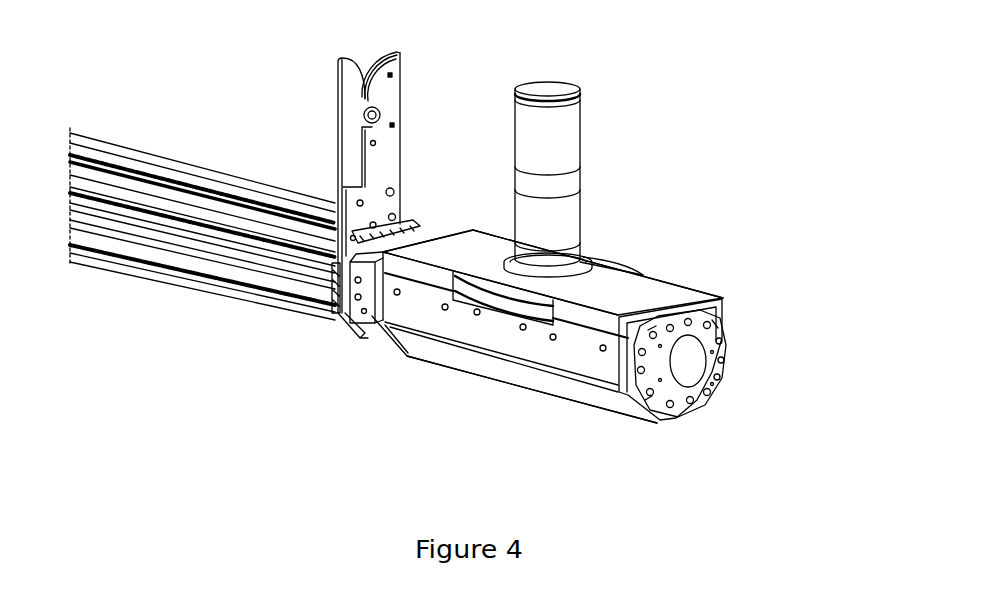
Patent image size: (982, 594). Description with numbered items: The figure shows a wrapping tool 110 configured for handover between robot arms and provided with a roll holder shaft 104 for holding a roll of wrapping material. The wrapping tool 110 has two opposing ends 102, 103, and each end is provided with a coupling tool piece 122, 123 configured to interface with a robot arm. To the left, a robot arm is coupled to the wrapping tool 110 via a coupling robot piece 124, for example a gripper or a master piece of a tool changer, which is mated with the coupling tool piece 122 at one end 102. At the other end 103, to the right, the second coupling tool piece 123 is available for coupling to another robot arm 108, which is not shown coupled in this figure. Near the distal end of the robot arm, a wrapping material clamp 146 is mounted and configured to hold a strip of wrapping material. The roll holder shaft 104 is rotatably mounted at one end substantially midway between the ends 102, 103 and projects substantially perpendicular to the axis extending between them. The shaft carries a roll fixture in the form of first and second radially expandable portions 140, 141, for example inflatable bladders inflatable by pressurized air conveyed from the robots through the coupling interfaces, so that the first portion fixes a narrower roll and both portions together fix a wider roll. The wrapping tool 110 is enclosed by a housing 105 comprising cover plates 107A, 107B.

The end 102 is at (447, 228).
The end 103 is at (728, 303).
The roll holder shaft 104 is at (547, 84).
The housing 105 is at (517, 384).
The cover plate 107A is at (669, 296).
The cover plate 107B is at (584, 361).
The robot arm 108 is at (142, 154).
The wrapping tool 110 is at (461, 391).
The coupling tool piece 122 is at (343, 314).
The coupling tool piece 123 is at (726, 363).
The coupling robot piece 124 is at (334, 268).
The roll fixture 140 is at (393, 92).
The roll fixture 141 is at (575, 205).
The wrapping material clamp 146 is at (370, 163).